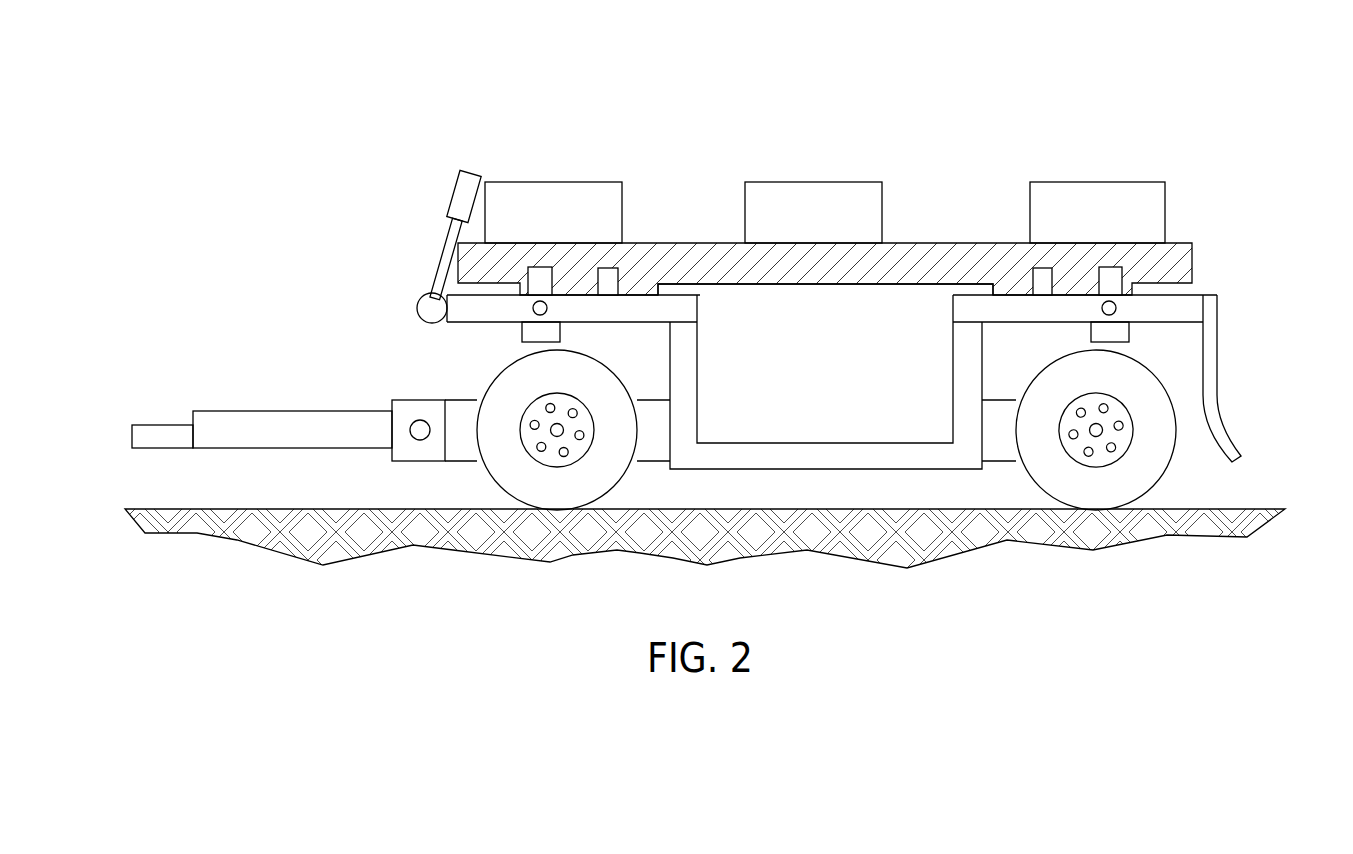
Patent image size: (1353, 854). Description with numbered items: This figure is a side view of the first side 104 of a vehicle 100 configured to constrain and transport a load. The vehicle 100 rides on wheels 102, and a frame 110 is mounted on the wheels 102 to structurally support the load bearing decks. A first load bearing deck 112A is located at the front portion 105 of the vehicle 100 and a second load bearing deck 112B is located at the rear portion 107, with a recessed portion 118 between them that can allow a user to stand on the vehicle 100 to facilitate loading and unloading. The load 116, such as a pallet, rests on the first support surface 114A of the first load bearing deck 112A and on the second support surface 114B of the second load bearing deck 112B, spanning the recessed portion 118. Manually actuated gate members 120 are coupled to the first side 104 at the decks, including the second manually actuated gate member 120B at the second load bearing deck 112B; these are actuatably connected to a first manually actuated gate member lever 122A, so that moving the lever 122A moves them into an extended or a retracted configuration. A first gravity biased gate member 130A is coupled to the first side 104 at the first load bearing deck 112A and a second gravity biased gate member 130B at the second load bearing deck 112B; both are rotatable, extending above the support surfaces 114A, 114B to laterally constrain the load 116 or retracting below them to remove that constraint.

The vehicle 100 is at (851, 289).
The wheels 102 is at (490, 477).
The first side 104 is at (1273, 354).
The front portion 105 is at (553, 156).
The rear portion 107 is at (1104, 156).
The frame 110 is at (962, 453).
The first load bearing deck 112A is at (545, 329).
The second load bearing deck 112B is at (1140, 324).
The first support surface 114A is at (457, 294).
The second support surface 114B is at (1203, 294).
The load 116 is at (717, 250).
The recessed portion 118 is at (825, 400).
The manually actuated gate members 120 is at (605, 270).
The second manually actuated gate member 120B is at (1041, 272).
The first manually actuated gate member lever 122A is at (441, 254).
The first gravity biased gate member 130A is at (481, 357).
The second gravity biased gate member 130B is at (1200, 358).